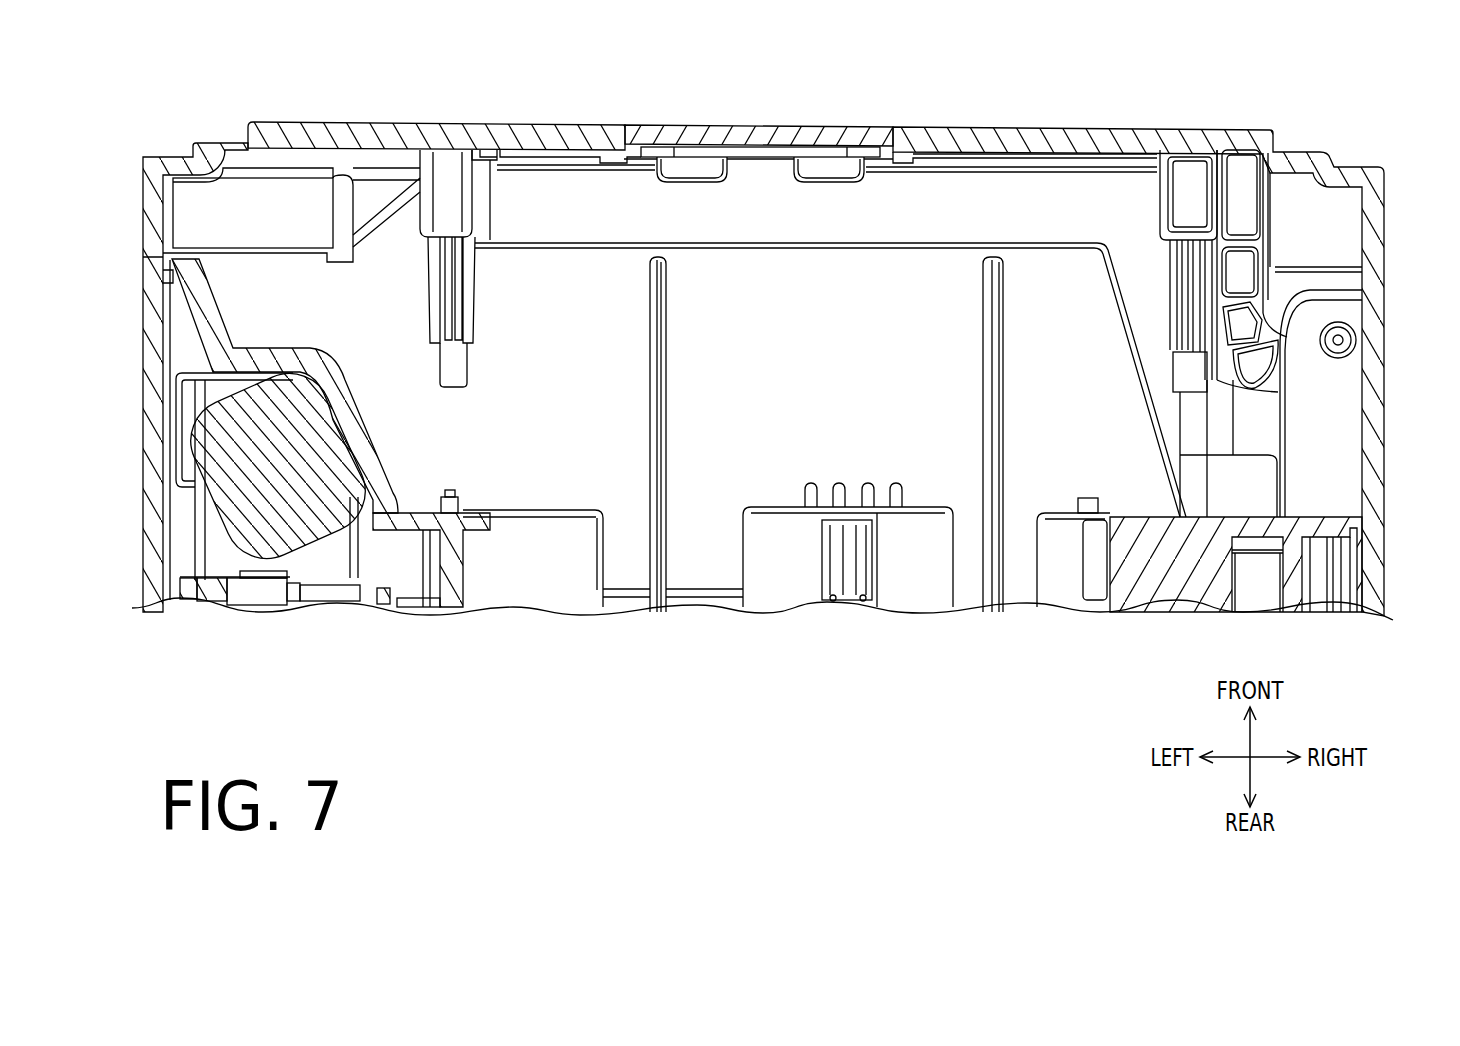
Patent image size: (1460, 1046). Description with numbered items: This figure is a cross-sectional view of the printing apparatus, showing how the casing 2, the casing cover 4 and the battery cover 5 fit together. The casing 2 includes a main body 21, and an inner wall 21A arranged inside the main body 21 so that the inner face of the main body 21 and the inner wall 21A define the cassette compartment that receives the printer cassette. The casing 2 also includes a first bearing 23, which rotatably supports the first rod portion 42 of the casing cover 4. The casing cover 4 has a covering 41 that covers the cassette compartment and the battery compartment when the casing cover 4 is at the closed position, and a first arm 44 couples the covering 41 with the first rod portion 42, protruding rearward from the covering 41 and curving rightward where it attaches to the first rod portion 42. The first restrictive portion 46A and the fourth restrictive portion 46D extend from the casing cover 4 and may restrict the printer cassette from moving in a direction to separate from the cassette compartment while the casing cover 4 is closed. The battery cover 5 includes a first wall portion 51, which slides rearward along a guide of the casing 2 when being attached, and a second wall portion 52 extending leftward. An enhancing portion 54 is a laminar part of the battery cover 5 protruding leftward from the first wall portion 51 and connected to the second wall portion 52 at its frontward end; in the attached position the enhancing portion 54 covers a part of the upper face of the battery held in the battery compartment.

The casing 2 is at (138, 497).
The casing cover 4 is at (1207, 130).
The battery cover 5 is at (1014, 150).
The main body 21 is at (157, 405).
The inner wall 21A is at (587, 295).
The first bearing 23 is at (1343, 397).
The covering 41 is at (945, 140).
The first rod portion 42 is at (1342, 337).
The first arm 44 is at (1240, 273).
The first restrictive portion 46A is at (1182, 287).
The fourth restrictive portion 46D is at (443, 298).
The first wall portion 51 is at (1207, 427).
The second wall portion 52 is at (763, 187).
The enhancing portion 54 is at (1137, 297).